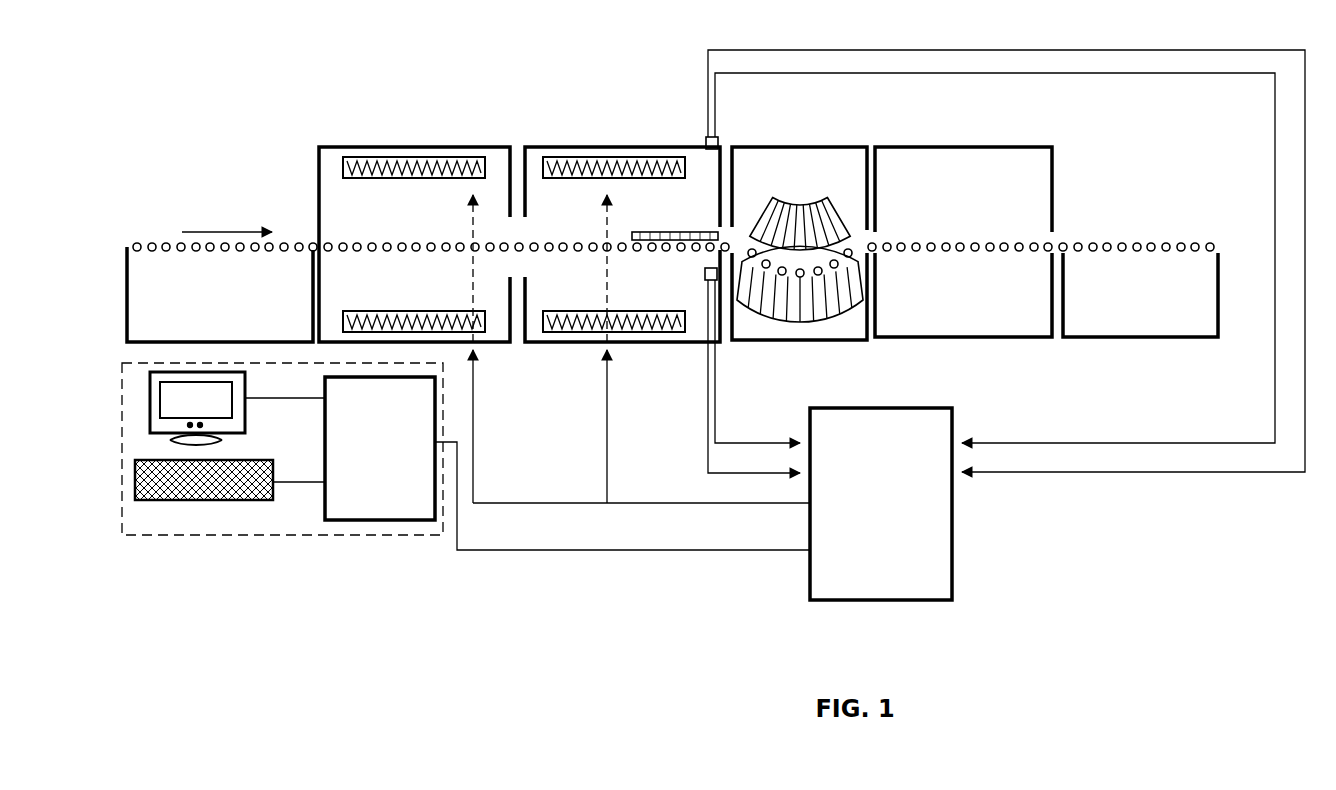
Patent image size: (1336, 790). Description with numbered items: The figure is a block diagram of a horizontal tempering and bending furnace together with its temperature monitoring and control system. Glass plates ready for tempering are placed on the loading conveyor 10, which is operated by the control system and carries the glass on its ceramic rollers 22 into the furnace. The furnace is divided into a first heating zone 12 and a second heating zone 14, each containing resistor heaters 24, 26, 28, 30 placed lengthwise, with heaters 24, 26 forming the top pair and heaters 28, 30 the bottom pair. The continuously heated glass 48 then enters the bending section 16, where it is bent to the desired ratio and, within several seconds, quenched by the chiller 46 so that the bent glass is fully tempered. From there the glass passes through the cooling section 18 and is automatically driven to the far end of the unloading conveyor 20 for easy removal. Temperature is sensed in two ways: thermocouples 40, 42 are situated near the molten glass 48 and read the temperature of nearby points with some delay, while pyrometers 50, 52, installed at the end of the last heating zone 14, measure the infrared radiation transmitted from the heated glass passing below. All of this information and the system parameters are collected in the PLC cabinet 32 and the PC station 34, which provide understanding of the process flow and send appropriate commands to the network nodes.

The loading conveyor 10 is at (140, 306).
The first heating zone 12 is at (330, 192).
The second heating zone 14 is at (537, 197).
The bending section 16 is at (776, 160).
The cooling section 18 is at (975, 170).
The unloading conveyor 20 is at (1203, 289).
The ceramic rollers 22 is at (135, 243).
The heater 24 is at (388, 157).
The heater 26 is at (614, 330).
The heater 28 is at (414, 321).
The heater 30 is at (614, 321).
The PLC cabinet 32 is at (925, 565).
The PC station 34 is at (355, 528).
The thermocouple 40 is at (752, 370).
The thermocouple 42 is at (735, 300).
The chiller 46 is at (793, 212).
The glass 48 is at (668, 233).
The pyrometer 50 is at (962, 261).
The pyrometer 52 is at (700, 139).